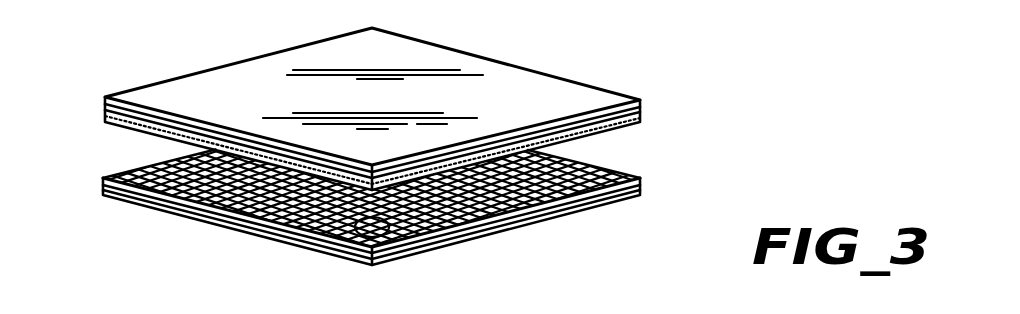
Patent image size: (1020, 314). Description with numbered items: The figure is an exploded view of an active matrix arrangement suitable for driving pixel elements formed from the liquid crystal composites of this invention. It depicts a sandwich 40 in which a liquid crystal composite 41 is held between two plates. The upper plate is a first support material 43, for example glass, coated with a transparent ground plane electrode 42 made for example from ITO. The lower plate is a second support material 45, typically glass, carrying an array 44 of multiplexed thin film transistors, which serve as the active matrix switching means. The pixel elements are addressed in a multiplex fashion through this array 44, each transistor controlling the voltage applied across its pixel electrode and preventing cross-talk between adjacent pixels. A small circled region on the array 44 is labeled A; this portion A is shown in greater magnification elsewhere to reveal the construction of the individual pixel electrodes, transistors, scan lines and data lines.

The sandwich 40 is at (643, 102).
The liquid crystal composite 41 is at (507, 155).
The transparent ground plane electrode 42 is at (548, 136).
The first support material 43 is at (235, 83).
The array of multiplexed TFT's 44 is at (180, 165).
The second support material 45 is at (215, 224).
The portion of FIG. 3 A is at (352, 236).